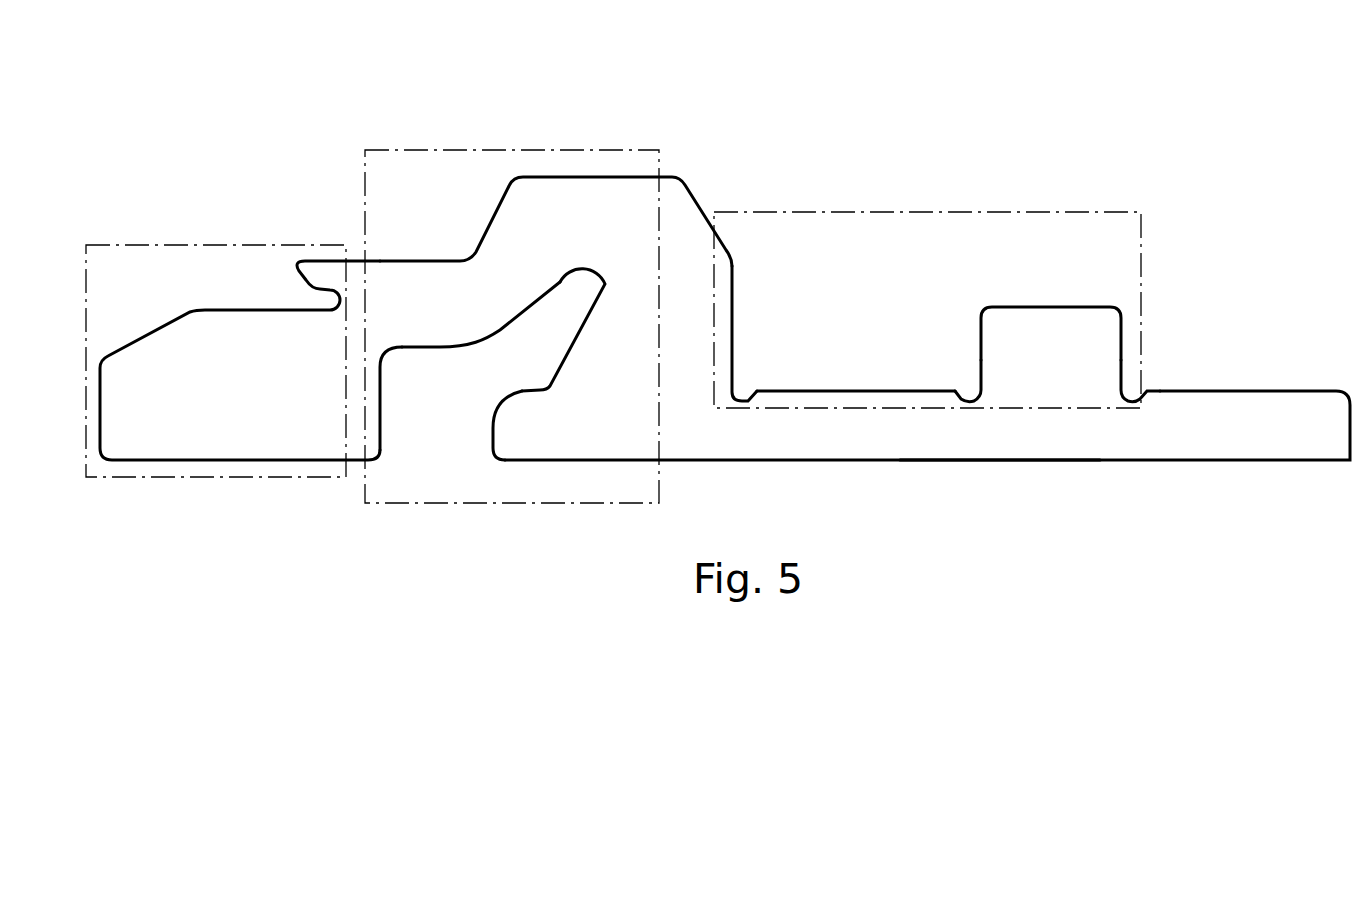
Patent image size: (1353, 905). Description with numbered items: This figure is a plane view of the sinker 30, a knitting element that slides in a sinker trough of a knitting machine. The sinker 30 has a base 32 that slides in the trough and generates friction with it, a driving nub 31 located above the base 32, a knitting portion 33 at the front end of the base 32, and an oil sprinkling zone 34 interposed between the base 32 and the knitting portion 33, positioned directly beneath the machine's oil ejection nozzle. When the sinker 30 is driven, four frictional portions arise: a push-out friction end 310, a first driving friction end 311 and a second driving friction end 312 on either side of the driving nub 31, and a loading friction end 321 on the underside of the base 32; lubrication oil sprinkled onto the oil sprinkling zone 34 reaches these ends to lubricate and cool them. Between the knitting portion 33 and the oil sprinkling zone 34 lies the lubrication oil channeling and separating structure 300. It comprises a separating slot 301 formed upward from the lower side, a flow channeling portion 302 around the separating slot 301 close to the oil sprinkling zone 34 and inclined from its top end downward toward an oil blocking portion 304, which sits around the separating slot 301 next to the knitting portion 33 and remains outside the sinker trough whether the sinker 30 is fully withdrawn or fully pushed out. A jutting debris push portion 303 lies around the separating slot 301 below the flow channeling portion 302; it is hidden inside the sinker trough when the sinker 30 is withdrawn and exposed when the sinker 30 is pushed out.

The sinker 30 is at (798, 128).
The lubrication oil channeling and separating structure 300 is at (548, 304).
The separating slot 301 is at (472, 384).
The flow channeling portion 302 is at (580, 337).
The debris push portion 303 is at (493, 443).
The oil blocking portion 304 is at (382, 410).
The driving nub 31 is at (1020, 315).
The push-out friction end 310 is at (732, 325).
The first driving friction end 311 is at (980, 355).
The second driving friction end 312 is at (1122, 357).
The base 32 is at (927, 499).
The loading friction end 321 is at (985, 462).
The knitting portion 33 is at (183, 245).
The oil sprinkling zone 34 is at (989, 259).